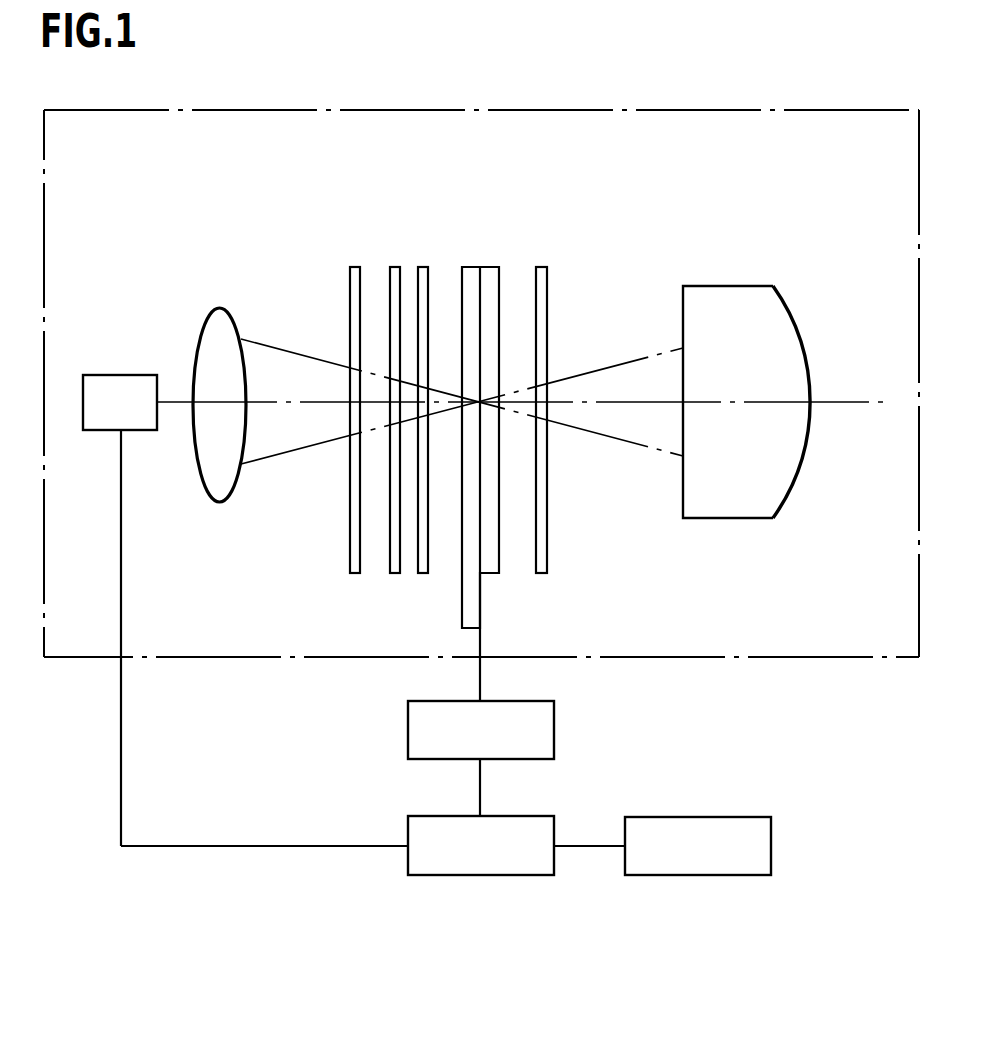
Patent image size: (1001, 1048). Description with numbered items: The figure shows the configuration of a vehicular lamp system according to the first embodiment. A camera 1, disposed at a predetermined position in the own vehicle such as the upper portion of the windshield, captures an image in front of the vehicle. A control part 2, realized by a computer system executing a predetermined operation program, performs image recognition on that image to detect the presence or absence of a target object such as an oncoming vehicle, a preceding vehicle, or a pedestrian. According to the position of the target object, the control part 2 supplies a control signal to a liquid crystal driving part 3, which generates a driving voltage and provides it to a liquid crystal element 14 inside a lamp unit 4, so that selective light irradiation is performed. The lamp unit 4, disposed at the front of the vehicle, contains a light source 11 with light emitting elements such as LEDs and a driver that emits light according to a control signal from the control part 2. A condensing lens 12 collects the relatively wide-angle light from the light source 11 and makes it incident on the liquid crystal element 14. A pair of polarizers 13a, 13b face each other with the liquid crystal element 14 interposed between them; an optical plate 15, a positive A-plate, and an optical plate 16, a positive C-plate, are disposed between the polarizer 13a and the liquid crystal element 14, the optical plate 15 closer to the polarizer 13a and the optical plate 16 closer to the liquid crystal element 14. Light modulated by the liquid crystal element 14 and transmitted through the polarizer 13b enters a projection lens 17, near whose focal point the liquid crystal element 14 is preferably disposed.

The camera 1 is at (745, 817).
The control part 2 is at (536, 816).
The liquid crystal driving part 3 is at (554, 728).
The lamp unit 4 is at (886, 658).
The light source 11 is at (120, 375).
The condensing lens 12 is at (219, 308).
The polarizer 13a is at (358, 267).
The polarizer 13b is at (541, 267).
The liquid crystal element 14 is at (481, 267).
The optical plate 15 is at (395, 267).
The optical plate 16 is at (427, 267).
The projection lens 17 is at (733, 286).